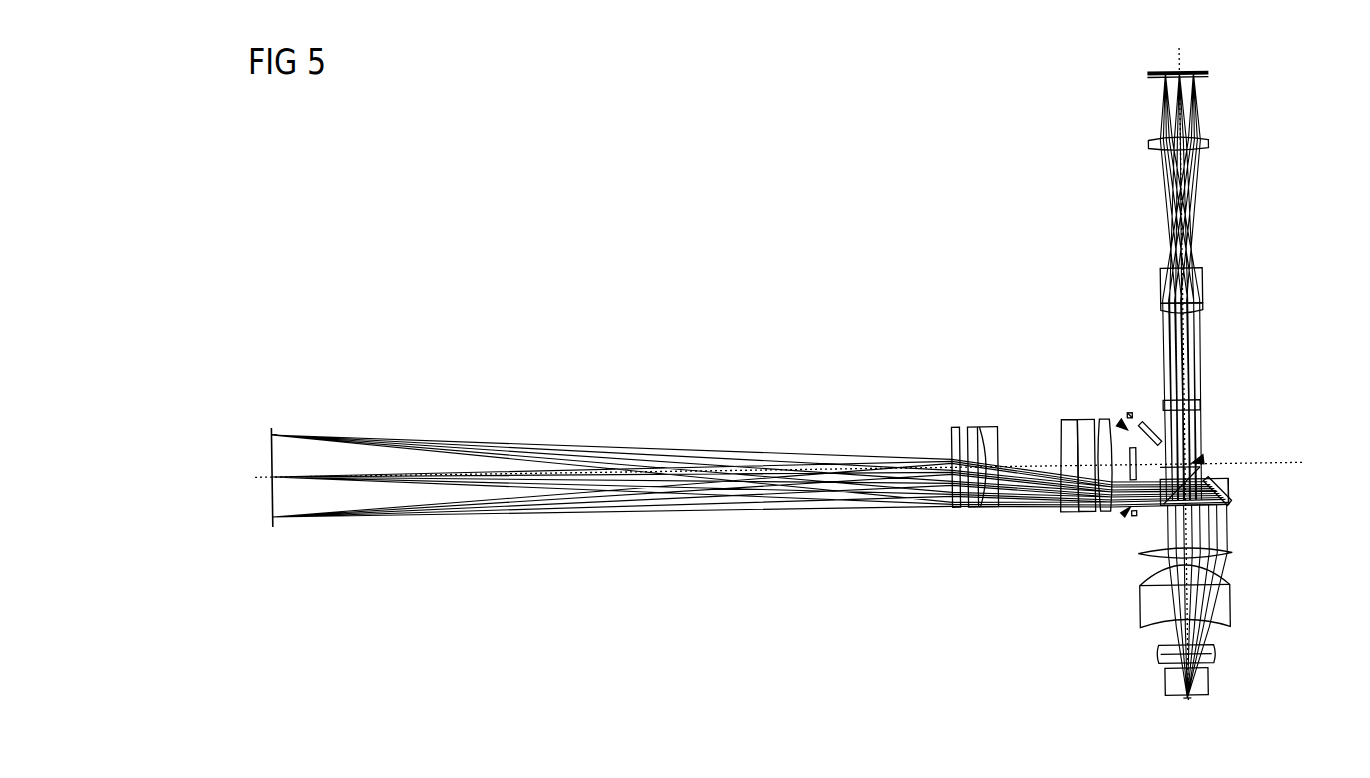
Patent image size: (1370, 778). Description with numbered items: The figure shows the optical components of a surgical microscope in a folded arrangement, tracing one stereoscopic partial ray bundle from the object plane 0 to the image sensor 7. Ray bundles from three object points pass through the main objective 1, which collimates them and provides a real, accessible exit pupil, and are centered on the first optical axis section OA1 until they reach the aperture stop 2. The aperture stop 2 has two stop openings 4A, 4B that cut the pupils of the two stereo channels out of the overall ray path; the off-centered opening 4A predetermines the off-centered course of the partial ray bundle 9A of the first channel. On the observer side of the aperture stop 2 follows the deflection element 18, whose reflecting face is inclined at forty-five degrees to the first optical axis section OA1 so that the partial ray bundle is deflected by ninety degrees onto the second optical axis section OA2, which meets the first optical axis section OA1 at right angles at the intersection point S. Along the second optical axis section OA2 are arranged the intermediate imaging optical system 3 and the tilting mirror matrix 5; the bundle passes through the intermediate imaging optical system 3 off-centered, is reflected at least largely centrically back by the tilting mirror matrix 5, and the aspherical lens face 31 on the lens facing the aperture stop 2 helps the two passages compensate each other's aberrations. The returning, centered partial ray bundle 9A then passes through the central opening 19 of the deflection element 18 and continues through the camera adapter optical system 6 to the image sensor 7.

The object plane 0 is at (274, 416).
The main objective 1 is at (945, 511).
The aperture stop 2 is at (1130, 412).
The intermediate imaging optical system 3 is at (1130, 550).
The stop opening 4A is at (1123, 514).
The stop opening 4B is at (1121, 423).
The tilting mirror matrix 5 is at (1180, 700).
The camera adapter optical system 6 is at (1216, 135).
The image sensor 7 is at (1166, 71).
The partial ray bundle 9A is at (1170, 477).
The deflection element 18 is at (1232, 492).
The central opening 19 is at (1202, 459).
The aspherical lens face 31 is at (1232, 556).
The intersection point S is at (1162, 507).
The first optical axis section OA1 is at (803, 470).
The second optical axis section OA2 is at (1184, 366).